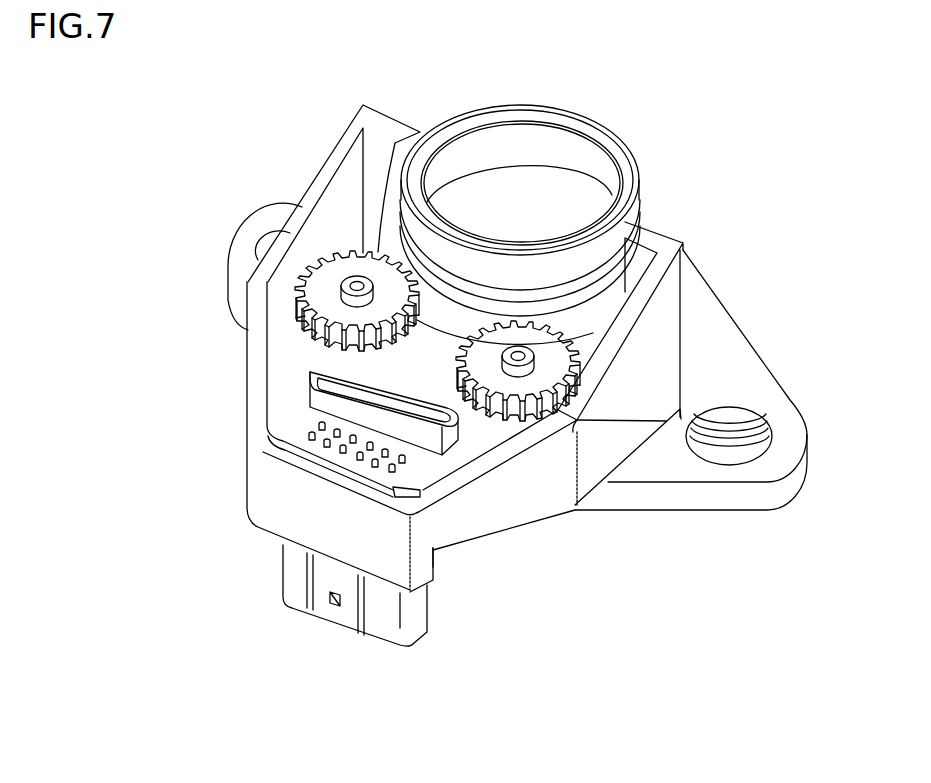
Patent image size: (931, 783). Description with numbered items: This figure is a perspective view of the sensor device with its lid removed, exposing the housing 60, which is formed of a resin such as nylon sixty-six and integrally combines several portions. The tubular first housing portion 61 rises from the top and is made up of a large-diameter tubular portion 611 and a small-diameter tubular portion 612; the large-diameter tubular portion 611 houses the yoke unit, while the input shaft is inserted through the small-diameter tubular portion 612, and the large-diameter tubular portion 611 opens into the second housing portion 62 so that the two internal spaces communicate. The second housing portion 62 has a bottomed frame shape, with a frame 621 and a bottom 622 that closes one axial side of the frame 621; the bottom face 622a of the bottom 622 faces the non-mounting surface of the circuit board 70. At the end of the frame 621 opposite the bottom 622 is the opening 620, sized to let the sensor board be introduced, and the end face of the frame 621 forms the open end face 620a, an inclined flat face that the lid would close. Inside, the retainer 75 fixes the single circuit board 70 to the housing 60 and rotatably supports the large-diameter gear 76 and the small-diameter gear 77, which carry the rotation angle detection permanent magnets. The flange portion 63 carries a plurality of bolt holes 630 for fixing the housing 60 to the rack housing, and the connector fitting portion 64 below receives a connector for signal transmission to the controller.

The housing 60 is at (614, 108).
The first housing portion 61 is at (723, 90).
The large-diameter tubular portion 611 is at (650, 160).
The small-diameter tubular portion 612 is at (605, 128).
The second housing portion 62 is at (140, 393).
The opening 620 is at (378, 139).
The open end face 620a is at (466, 478).
The frame 621 is at (243, 467).
The bottom 622 is at (277, 418).
The bottom face 622a is at (488, 438).
The flange portion 63 is at (760, 355).
The bolt hole 630 is at (265, 245).
The connector fitting portion 64 is at (283, 568).
The circuit board 70 is at (310, 423).
The retainer 75 is at (288, 370).
The large-diameter gear 76 is at (590, 319).
The small-diameter gear 77 is at (327, 238).